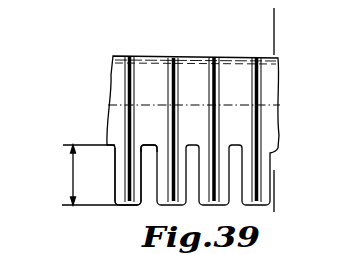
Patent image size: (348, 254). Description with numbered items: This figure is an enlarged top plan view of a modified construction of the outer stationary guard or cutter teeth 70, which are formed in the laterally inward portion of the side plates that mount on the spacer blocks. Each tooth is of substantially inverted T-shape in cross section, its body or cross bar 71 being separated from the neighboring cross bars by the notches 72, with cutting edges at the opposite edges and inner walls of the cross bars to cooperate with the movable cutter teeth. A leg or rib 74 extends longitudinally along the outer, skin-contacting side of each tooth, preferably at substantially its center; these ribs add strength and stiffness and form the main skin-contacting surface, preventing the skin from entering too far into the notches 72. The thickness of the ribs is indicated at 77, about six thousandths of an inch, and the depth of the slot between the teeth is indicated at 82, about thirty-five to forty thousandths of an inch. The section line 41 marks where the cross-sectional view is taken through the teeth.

The section line 41 is at (275, 195).
The stationary cutter teeth 70 is at (275, 173).
The cross bar 71 is at (115, 173).
The notches 72 is at (149, 197).
The rib 74 is at (253, 93).
The thickness of the ribs 77 is at (71, 245).
The depth of the slot 82 is at (73, 172).